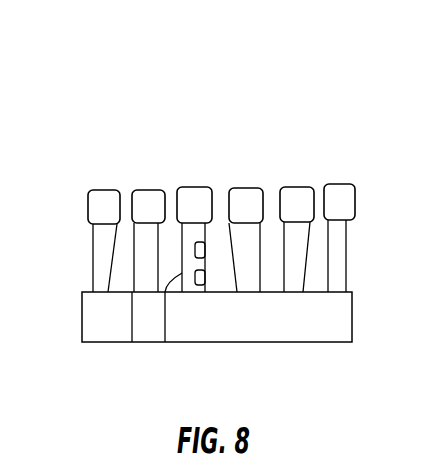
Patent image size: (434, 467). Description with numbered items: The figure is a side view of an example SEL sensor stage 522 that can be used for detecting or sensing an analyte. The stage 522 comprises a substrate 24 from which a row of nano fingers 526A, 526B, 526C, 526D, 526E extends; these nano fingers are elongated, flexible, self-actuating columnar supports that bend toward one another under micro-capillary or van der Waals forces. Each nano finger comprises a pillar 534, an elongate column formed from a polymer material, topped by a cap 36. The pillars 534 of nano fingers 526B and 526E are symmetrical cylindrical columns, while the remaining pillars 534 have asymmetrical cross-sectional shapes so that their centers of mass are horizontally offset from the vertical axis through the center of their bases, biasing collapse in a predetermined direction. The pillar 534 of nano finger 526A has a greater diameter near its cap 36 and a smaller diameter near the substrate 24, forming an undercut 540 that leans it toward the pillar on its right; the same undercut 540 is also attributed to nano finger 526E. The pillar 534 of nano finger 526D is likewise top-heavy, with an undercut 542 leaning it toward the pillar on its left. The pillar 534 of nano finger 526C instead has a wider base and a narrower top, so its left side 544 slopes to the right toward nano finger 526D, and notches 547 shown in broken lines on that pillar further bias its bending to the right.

The SEL stage 522 is at (103, 95).
The substrate 24 is at (82, 326).
The cap 36 is at (88, 208).
The pillar 534 is at (93, 246).
The undercut 540 is at (113, 278).
The undercut 542 is at (236, 276).
The left side 544 is at (165, 342).
The notches 547 is at (206, 282).
The nano finger 526A is at (100, 189).
The nano finger 526B is at (150, 189).
The nano finger 526C is at (195, 186).
The nano finger 526D is at (255, 187).
The nano finger 526E is at (308, 186).